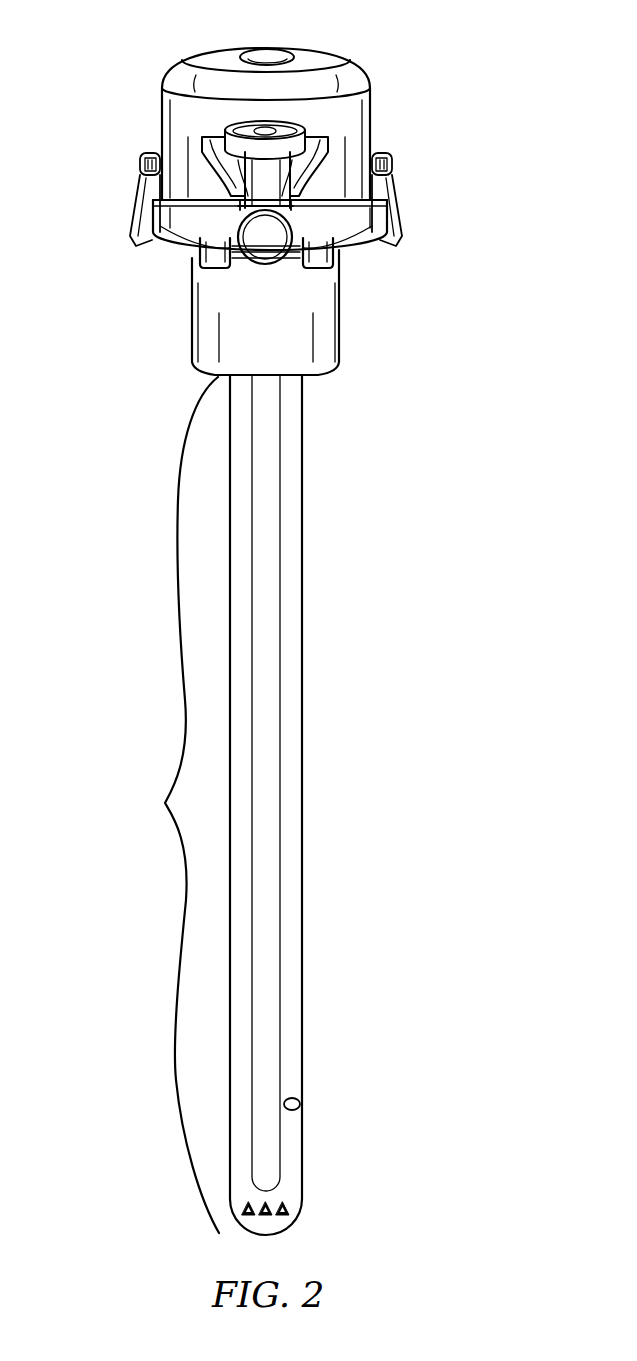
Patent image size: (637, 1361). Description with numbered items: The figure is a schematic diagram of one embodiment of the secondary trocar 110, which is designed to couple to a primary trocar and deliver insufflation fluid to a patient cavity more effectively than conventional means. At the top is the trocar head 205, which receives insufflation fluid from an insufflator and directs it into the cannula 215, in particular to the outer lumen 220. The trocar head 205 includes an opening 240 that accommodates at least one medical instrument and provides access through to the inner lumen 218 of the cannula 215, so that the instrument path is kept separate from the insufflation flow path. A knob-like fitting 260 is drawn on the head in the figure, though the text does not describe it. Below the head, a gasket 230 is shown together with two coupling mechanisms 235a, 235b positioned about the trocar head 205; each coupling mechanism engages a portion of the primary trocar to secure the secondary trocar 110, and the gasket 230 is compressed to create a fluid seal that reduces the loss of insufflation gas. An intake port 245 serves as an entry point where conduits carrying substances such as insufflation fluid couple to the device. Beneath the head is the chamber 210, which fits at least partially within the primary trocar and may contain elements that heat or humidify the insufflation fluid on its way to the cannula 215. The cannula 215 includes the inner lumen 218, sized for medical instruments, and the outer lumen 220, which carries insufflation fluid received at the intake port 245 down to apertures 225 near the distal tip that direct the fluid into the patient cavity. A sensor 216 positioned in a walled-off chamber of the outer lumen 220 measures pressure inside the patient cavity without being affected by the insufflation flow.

The secondary trocar 110 is at (393, 98).
The trocar head 205 is at (353, 127).
The opening 240 is at (277, 50).
The knob 260 is at (240, 128).
The gasket 230 is at (178, 258).
The coupling mechanism 235a is at (138, 244).
The coupling mechanism 235b is at (398, 246).
The intake port 245 is at (263, 247).
The chamber 210 is at (208, 336).
The outer lumen 220 is at (302, 567).
The inner lumen 218 is at (267, 730).
The sensor 216 is at (300, 1101).
The apertures 225 is at (282, 1216).
The cannula 215 is at (170, 805).